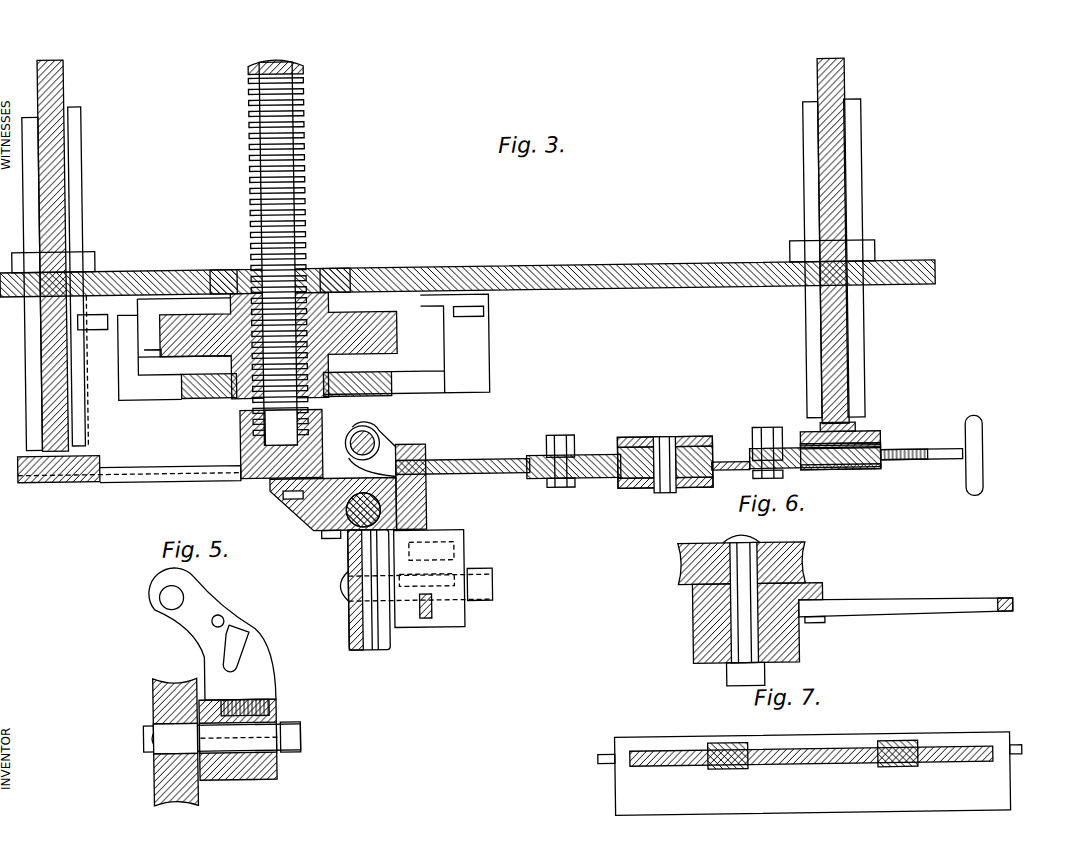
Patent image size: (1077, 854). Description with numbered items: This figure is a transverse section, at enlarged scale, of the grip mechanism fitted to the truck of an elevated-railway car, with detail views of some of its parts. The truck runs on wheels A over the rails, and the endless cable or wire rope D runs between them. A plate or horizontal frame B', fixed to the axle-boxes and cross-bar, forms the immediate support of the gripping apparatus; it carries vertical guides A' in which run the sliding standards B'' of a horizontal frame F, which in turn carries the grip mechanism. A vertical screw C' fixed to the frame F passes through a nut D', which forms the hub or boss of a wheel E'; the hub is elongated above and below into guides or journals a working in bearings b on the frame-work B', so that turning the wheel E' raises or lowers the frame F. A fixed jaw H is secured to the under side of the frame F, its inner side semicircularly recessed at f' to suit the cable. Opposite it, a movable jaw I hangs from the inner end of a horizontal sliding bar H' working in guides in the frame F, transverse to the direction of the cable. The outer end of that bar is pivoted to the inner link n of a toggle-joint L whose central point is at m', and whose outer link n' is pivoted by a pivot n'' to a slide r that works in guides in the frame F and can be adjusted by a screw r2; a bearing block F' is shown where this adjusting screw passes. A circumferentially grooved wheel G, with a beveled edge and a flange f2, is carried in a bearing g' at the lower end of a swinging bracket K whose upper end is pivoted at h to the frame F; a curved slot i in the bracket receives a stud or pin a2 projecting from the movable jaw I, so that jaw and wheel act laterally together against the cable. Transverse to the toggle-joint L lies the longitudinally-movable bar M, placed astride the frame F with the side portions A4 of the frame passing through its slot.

In FIG. 3, the plate or horizontal frame B' is at (467, 262).
In FIG. 3, the sliding standards B'' is at (456, 250).
In FIG. 3, the vertical guides A' is at (452, 273).
In FIG. 3, the vertical screw C' is at (300, 252).
In FIG. 3, the nut D' is at (278, 317).
In FIG. 3, the wheel E' is at (303, 347).
In FIG. 3, the bearings b is at (286, 333).
In FIG. 3, the guides or journals a is at (236, 272).
In FIG. 3, the horizontal frame F is at (130, 480).
In FIG. 3, the bearing block F' is at (840, 460).
In FIG. 3, the cable or wire rope D is at (310, 469).
In FIG. 3, the fixed jaw H is at (333, 511).
In FIG. 3, the horizontal sliding bar H' is at (462, 481).
In FIG. 7, the horizontal sliding bar H' is at (882, 759).
In FIG. 3, the pivot h is at (373, 442).
In FIG. 5, the pivot h is at (171, 597).
In FIG. 3, the swinging bracket K is at (438, 478).
In FIG. 5, the swinging bracket K is at (212, 634).
In FIG. 3, the stud or pin a2 is at (420, 463).
In FIG. 5, the stud or pin a2 is at (216, 620).
In FIG. 7, the stud or pin a2 is at (812, 754).
In FIG. 3, the curved slot i is at (429, 493).
In FIG. 5, the curved slot i is at (231, 649).
In FIG. 3, the movable jaw I is at (423, 518).
In FIG. 7, the movable jaw I is at (812, 769).
In FIG. 3, the wheel G is at (365, 606).
In FIG. 5, the wheel G is at (176, 754).
In FIG. 6, the wheel G is at (752, 562).
In FIG. 3, the bearing g' is at (420, 578).
In FIG. 5, the bearing g' is at (222, 752).
In FIG. 6, the bearing g' is at (836, 608).
In FIG. 3, the semicircular recess f' is at (354, 488).
In FIG. 3, the wheel flange f2 is at (336, 668).
In FIG. 3, the toggle-joint L is at (607, 487).
In FIG. 3, the inner link n is at (574, 461).
In FIG. 3, the longitudinally-movable bar M is at (665, 447).
In FIG. 3, the central point of toggle-joint m' is at (665, 478).
In FIG. 3, the outer link n' is at (730, 455).
In FIG. 3, the pivot n'' is at (767, 441).
In FIG. 3, the slide r is at (816, 468).
In FIG. 3, the screw r2 is at (931, 455).
In FIG. 7, the wheels A is at (813, 774).
In FIG. 7, the side portions of frame A4 is at (711, 767).